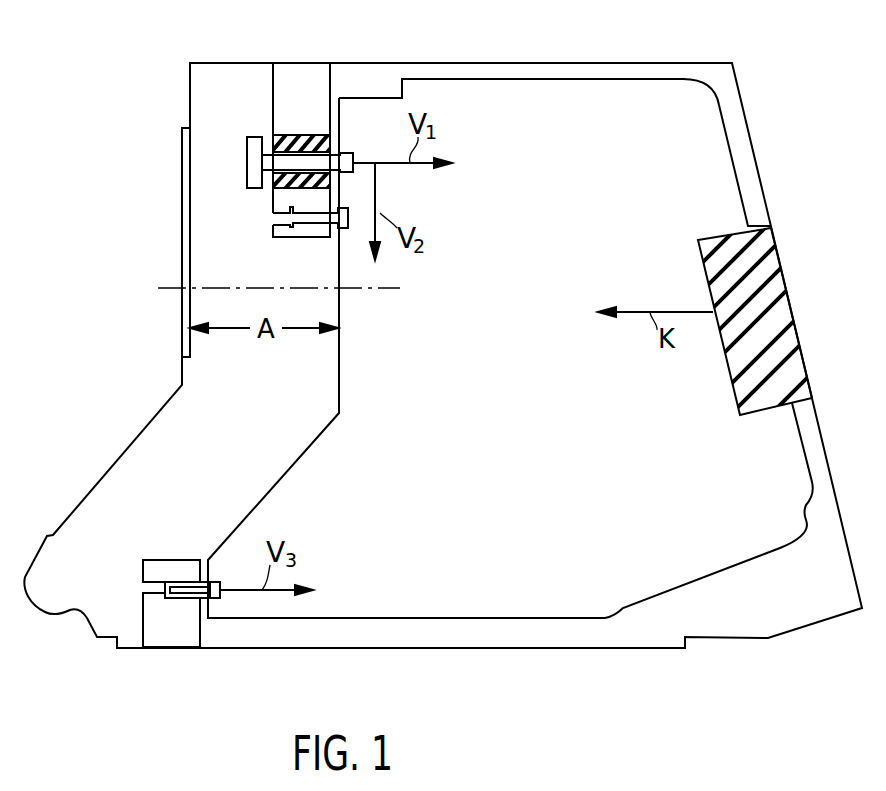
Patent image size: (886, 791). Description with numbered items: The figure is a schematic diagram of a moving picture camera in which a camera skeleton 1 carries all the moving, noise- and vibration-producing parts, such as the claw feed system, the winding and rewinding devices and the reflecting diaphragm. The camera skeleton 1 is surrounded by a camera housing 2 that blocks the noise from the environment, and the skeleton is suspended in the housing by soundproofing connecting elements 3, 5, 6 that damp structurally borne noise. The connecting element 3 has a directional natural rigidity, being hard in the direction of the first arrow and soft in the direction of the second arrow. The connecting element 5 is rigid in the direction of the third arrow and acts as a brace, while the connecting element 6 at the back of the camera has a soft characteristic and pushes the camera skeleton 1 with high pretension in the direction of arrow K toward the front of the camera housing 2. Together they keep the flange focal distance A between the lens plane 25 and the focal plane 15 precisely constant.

The camera skeleton 1 is at (597, 602).
The camera housing 2 is at (747, 112).
The connecting element 3 is at (312, 70).
The connecting element 5 is at (171, 635).
The connecting element 6 is at (777, 288).
The focal plane 15 is at (339, 290).
The lens plane 25 is at (182, 213).